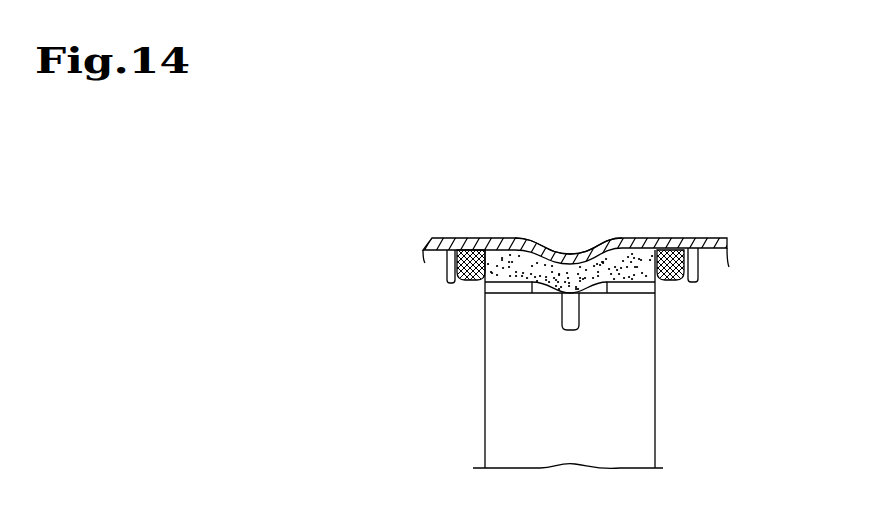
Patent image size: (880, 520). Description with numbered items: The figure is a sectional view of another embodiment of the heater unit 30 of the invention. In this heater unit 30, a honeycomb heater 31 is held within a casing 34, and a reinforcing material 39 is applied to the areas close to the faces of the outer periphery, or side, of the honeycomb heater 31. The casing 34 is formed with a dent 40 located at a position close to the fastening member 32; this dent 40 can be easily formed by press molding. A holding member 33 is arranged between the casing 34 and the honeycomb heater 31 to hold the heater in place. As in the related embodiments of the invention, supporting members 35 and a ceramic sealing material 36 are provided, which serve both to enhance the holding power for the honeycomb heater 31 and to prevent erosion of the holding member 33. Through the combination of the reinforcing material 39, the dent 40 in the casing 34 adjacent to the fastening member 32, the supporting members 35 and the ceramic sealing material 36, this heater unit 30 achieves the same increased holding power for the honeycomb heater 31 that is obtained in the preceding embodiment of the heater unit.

The heater unit 30 is at (529, 239).
The honeycomb heater 31 is at (633, 353).
The fastening member 32 is at (562, 325).
The holding member 33 is at (595, 275).
The casing 34 is at (463, 243).
The supporting member 35 is at (445, 268).
The ceramic sealing material 36 is at (473, 283).
The reinforcing material 39 is at (632, 285).
The dent 40 is at (573, 253).